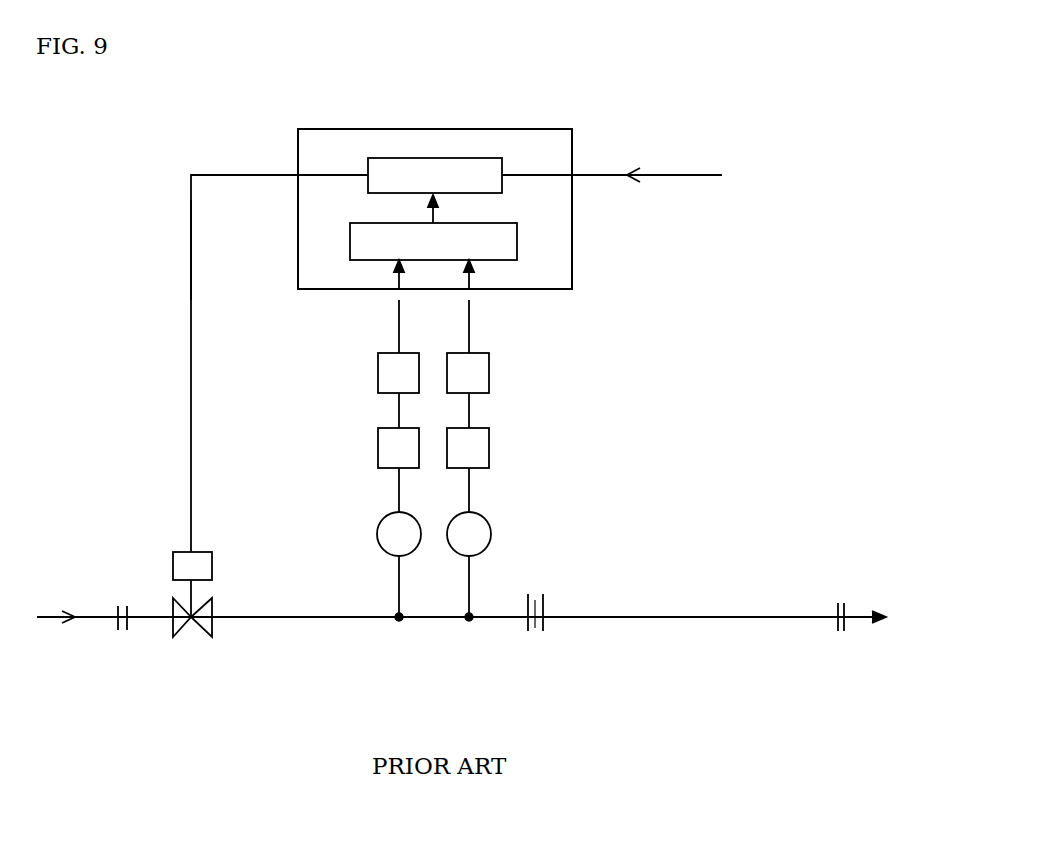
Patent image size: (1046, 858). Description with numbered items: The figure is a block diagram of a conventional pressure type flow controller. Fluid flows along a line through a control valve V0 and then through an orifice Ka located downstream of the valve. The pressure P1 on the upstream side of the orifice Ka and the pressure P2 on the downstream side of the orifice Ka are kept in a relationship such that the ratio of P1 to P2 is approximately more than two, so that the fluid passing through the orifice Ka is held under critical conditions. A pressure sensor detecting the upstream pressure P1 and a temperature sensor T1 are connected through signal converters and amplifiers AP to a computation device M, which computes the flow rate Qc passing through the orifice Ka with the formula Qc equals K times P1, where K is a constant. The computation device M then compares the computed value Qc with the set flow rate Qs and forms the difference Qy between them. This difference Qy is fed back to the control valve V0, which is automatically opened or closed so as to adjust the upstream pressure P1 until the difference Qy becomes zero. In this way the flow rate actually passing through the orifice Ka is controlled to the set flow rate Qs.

The computation device M is at (393, 129).
The set flow rate Qs is at (631, 172).
The difference Qy is at (195, 254).
The amplifier AP is at (378, 377).
The pressure on the upstream side of the orifice P1 is at (399, 564).
The temperature sensor T1 is at (469, 564).
The control valve V0 is at (210, 628).
The orifice Ka is at (540, 634).
The pressure on the downstream side of the orifice P2 is at (668, 616).